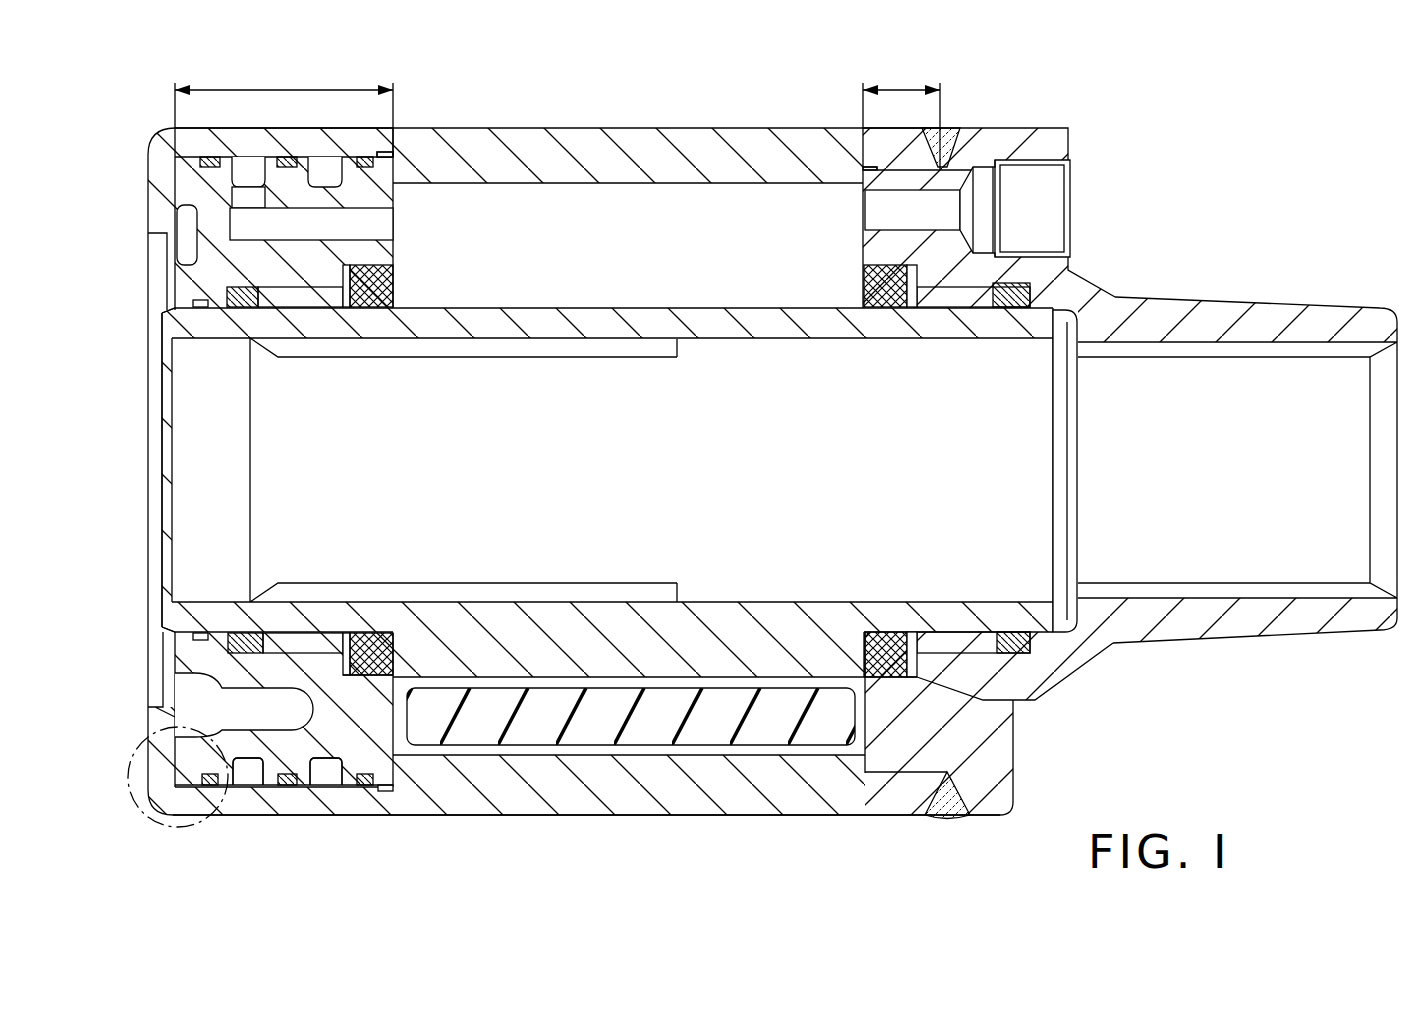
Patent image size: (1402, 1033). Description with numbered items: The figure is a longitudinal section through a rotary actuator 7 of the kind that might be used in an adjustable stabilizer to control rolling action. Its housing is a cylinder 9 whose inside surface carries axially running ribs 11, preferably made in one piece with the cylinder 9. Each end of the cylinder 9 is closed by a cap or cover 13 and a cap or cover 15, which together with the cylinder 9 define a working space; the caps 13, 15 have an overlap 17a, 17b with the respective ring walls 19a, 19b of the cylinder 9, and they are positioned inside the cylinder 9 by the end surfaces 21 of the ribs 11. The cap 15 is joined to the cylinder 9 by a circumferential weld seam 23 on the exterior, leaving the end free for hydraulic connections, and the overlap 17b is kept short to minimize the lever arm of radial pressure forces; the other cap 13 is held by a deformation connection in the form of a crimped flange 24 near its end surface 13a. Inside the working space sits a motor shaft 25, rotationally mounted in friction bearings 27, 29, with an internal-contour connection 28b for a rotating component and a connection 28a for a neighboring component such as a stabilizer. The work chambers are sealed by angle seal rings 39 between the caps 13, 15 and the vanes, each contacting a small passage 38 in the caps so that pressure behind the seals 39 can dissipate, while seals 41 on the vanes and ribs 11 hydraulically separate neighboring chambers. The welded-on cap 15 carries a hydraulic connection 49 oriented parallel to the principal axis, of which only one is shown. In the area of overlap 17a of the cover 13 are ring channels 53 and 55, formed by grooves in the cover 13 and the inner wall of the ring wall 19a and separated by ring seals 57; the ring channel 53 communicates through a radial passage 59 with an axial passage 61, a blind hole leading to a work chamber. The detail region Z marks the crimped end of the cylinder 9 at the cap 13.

The rotary actuator 7 is at (677, 843).
The cylinder 9 is at (680, 140).
The ribs 11 is at (586, 757).
The cap or cover 13 is at (187, 765).
The end surface 13a is at (193, 735).
The cap or cover 15 is at (1055, 147).
The overlap 17a is at (318, 84).
The overlap 17b is at (914, 86).
The ring wall 19a is at (372, 147).
The ring wall 19b is at (875, 145).
The end surfaces 21 is at (395, 175).
The weld seam 23 is at (945, 827).
The crimped flange 24 is at (160, 153).
The motor shaft 25 is at (205, 613).
The friction bearing 27 is at (290, 650).
The connection 28a is at (1275, 390).
The connection 28b is at (390, 595).
The friction bearing 29 is at (965, 292).
The small passage 38 is at (387, 710).
The angle seal rings 39 is at (357, 787).
The seals 41 is at (760, 725).
The hydraulic connection 49 is at (1035, 190).
The ring channel 53 is at (247, 778).
The ring channel 55 is at (330, 778).
The ring seals 57 is at (212, 787).
The radial passage 59 is at (245, 197).
The axial passage 61 is at (248, 237).
The detail circle Z is at (120, 772).